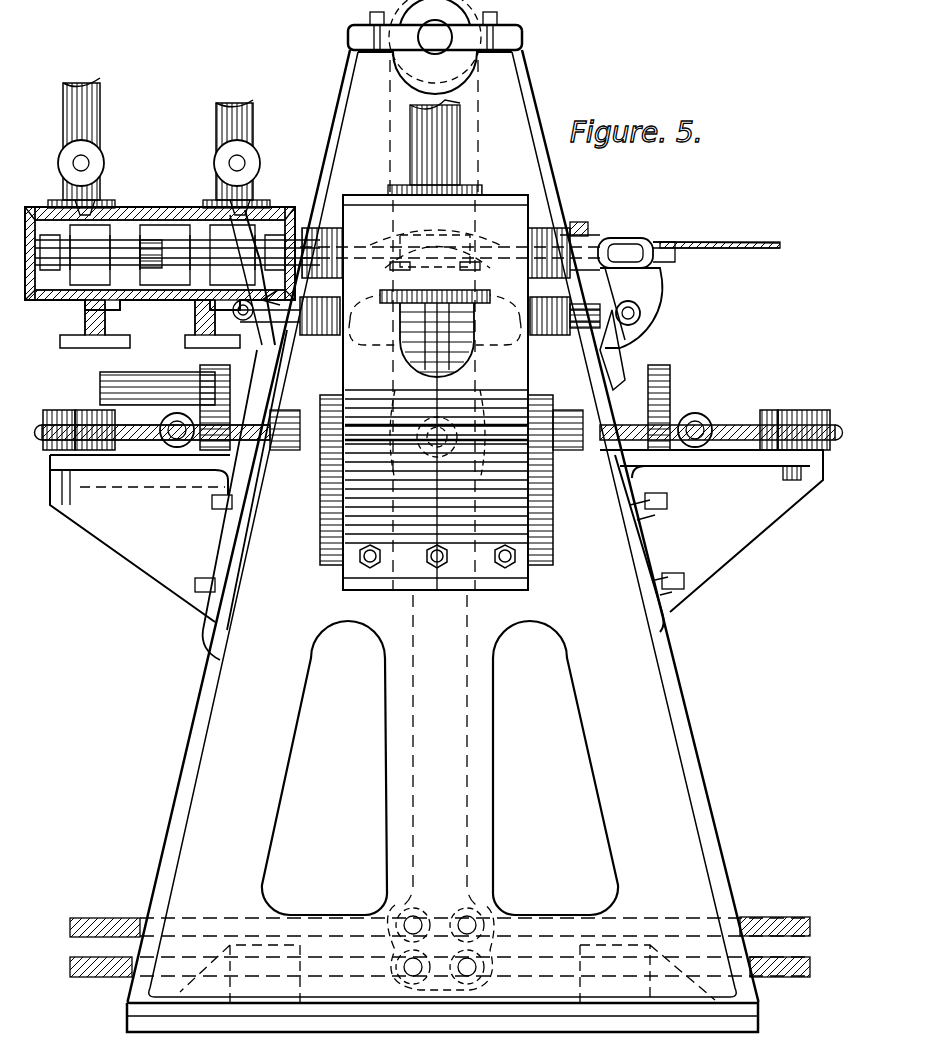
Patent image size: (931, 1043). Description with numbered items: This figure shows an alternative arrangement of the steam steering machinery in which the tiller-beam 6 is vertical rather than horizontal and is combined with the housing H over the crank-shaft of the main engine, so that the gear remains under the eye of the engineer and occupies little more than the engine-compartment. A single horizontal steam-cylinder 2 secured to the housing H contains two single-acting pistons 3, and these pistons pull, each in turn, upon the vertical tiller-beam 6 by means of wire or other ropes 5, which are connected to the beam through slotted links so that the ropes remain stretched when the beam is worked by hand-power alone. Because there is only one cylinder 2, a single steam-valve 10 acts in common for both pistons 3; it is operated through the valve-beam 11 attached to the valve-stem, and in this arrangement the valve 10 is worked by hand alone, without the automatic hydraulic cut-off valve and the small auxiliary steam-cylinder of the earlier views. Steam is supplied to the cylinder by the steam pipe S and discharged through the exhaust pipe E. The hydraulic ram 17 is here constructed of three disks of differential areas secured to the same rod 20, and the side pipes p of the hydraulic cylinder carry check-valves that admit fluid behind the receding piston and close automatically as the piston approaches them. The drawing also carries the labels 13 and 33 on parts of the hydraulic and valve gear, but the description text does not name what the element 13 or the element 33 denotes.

The housing H is at (440, 516).
The steam pipe S is at (435, 147).
The steam-cylinder 2 is at (436, 392).
The piston 3 is at (448, 422).
The rope 5 is at (140, 420).
The tiller-beam 6 is at (436, 717).
The steam-valve 10 is at (450, 247).
The valve-beam 11 is at (600, 240).
The cylinder 13 is at (155, 378).
The hydraulic ram 17 is at (172, 274).
The rod 20 is at (177, 251).
The rod 33 is at (716, 234).
The exhaust pipe E is at (470, 355).
The side pipe p is at (104, 160).